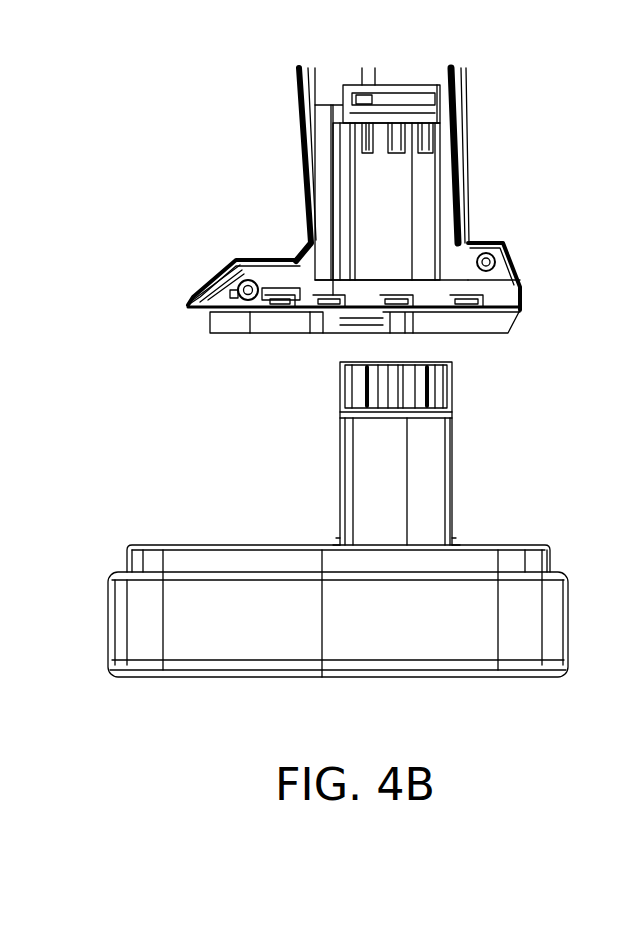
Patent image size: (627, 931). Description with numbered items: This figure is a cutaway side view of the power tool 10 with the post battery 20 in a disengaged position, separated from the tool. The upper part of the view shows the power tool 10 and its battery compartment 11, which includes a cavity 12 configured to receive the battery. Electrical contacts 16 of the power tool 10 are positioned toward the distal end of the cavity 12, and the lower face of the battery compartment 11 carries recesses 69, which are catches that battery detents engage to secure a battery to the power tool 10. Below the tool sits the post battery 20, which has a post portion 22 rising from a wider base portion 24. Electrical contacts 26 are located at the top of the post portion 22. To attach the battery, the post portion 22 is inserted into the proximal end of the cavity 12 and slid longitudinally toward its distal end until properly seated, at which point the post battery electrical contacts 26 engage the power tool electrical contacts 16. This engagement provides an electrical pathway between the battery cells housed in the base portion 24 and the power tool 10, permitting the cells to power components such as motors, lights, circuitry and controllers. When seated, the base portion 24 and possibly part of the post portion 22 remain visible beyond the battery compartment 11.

The power tool 10 is at (258, 127).
The battery compartment 11 is at (227, 350).
The cavity 12 is at (392, 207).
The electrical contacts 16 is at (417, 138).
The post battery 20 is at (171, 473).
The post portion 22 is at (452, 487).
The base portion 24 is at (568, 588).
The electrical contacts 26 is at (438, 397).
The recesses 69 is at (347, 318).